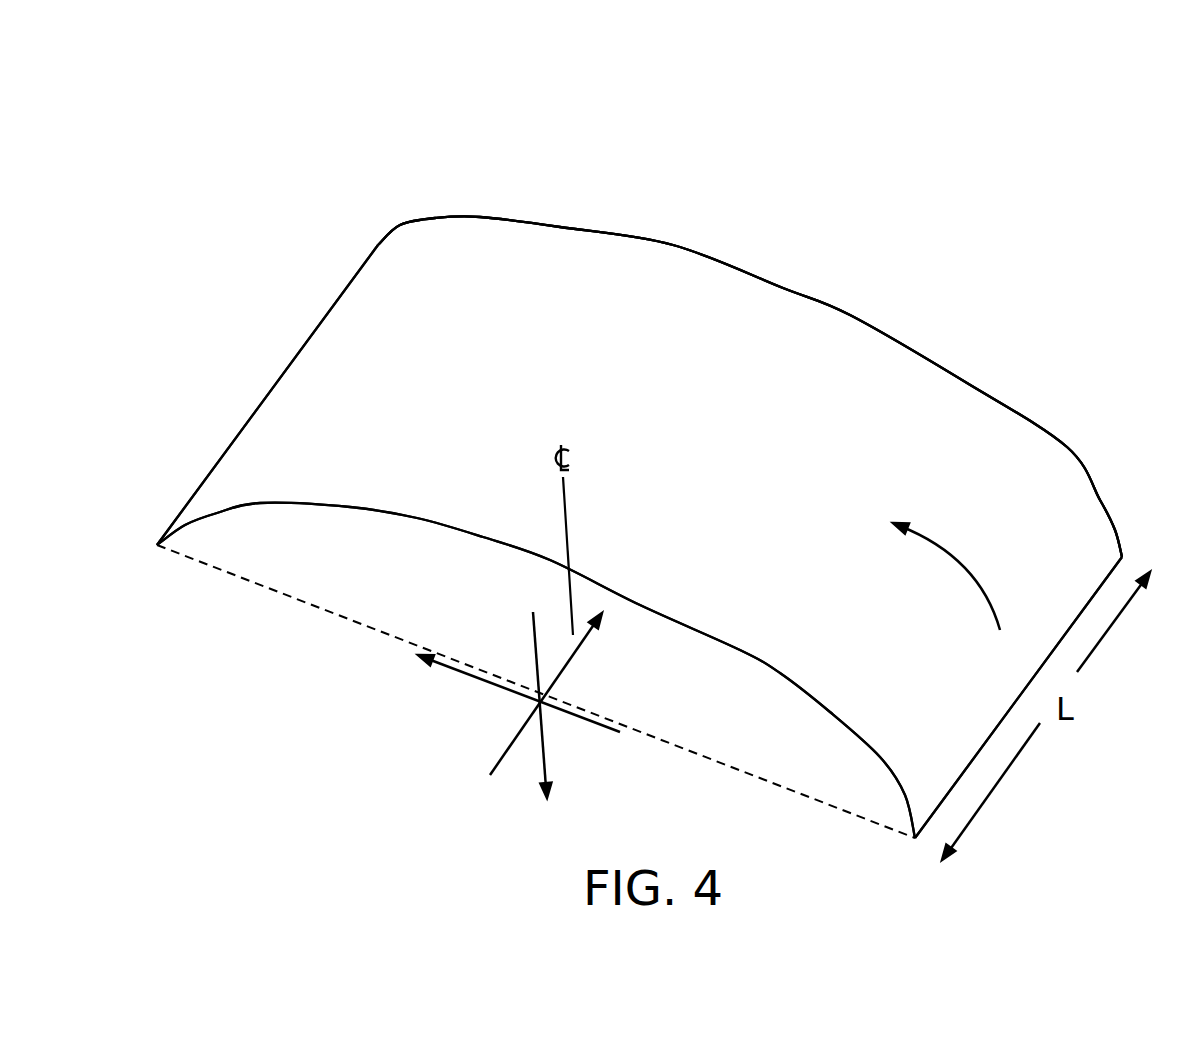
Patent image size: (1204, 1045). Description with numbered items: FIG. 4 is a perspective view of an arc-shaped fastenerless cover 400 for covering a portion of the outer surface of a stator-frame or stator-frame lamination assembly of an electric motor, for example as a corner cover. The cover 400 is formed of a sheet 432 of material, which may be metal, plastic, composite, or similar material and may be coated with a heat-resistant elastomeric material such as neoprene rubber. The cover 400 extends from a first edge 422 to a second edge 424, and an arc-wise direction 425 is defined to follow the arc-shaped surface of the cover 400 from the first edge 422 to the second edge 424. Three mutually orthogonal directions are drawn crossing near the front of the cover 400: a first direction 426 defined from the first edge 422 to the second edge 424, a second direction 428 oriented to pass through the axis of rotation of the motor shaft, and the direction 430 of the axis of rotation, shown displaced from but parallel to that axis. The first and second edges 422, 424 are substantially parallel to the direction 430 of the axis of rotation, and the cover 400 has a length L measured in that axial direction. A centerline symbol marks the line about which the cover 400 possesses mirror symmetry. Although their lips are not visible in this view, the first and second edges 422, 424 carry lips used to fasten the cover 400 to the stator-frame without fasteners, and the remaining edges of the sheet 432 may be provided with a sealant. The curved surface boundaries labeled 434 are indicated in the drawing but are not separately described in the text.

The fastenerless cover 400 is at (1080, 117).
The first edge 422 is at (1075, 590).
The second edge 424 is at (310, 295).
The arc-wise direction 425 is at (945, 582).
The first direction 426 is at (490, 693).
The second direction 428 is at (560, 757).
The direction of the axis of rotation 430 is at (575, 670).
The sheet 432 is at (830, 335).
The curved surface edge 434 is at (684, 232).